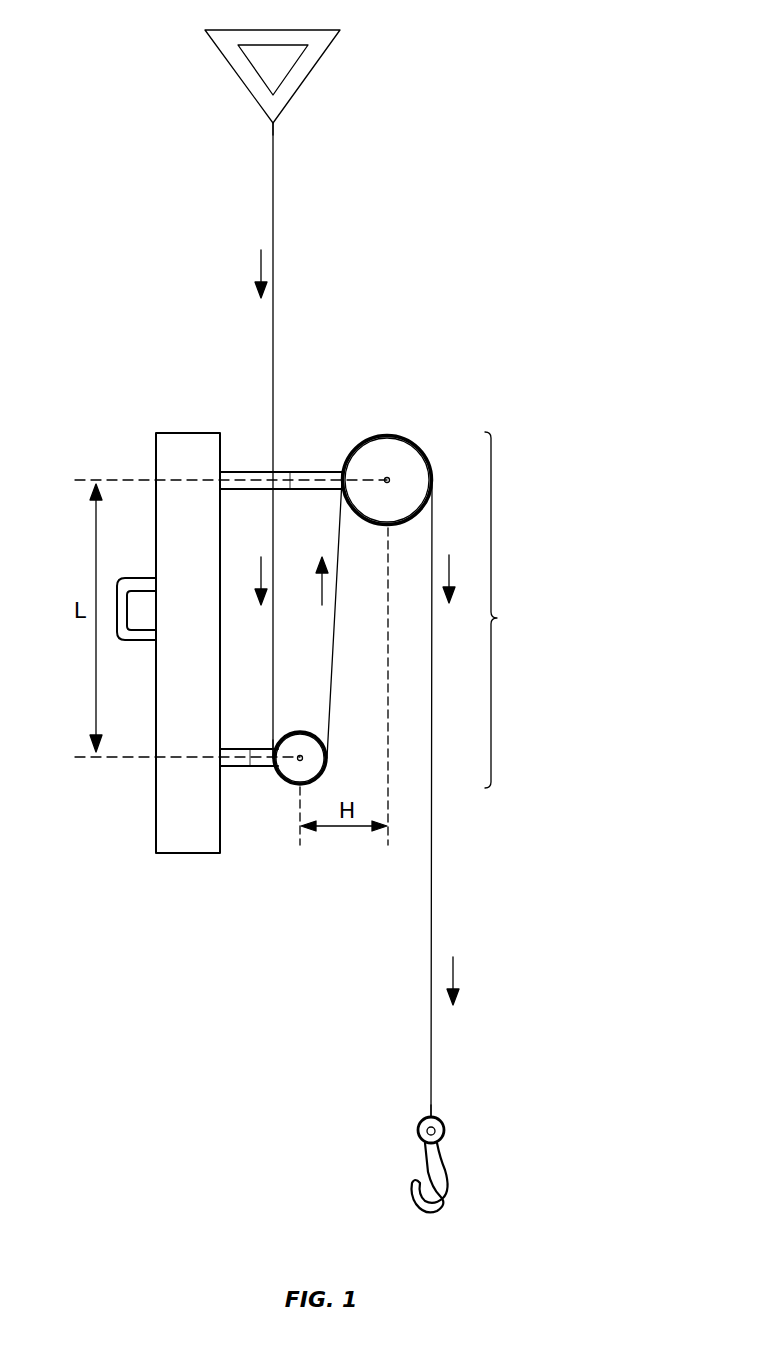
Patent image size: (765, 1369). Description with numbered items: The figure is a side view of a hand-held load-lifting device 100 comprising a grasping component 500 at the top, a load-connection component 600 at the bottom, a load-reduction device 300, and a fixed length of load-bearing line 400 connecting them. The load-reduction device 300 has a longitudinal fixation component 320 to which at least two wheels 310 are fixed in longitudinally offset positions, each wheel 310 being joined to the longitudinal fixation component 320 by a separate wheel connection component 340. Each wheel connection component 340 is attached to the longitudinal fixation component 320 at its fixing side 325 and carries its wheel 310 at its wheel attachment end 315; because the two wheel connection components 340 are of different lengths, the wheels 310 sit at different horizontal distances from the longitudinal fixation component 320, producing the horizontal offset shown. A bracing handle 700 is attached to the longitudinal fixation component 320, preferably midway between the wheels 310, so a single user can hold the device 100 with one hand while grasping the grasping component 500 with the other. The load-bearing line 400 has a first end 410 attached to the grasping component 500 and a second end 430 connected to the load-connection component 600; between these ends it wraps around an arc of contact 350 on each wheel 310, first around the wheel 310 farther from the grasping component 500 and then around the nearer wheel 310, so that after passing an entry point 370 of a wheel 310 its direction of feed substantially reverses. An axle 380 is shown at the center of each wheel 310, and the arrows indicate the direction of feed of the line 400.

The load-lifting device 100 is at (519, 179).
The load-reduction device 300 is at (514, 610).
The wheel 310 is at (388, 460).
The wheel attachment end 315 is at (338, 472).
The longitudinal fixation component 320 is at (167, 448).
The fixing side 325 is at (220, 472).
The wheel connection component 340 is at (290, 472).
The arc of contact 350 is at (406, 446).
The entry point 370 is at (280, 741).
The axle 380 is at (390, 478).
The load-bearing line 400 is at (273, 240).
The first end 410 is at (273, 123).
The second end 430 is at (433, 1115).
The grasping component 500 is at (316, 60).
The load-connection component 600 is at (457, 1180).
The bracing handle 700 is at (137, 640).